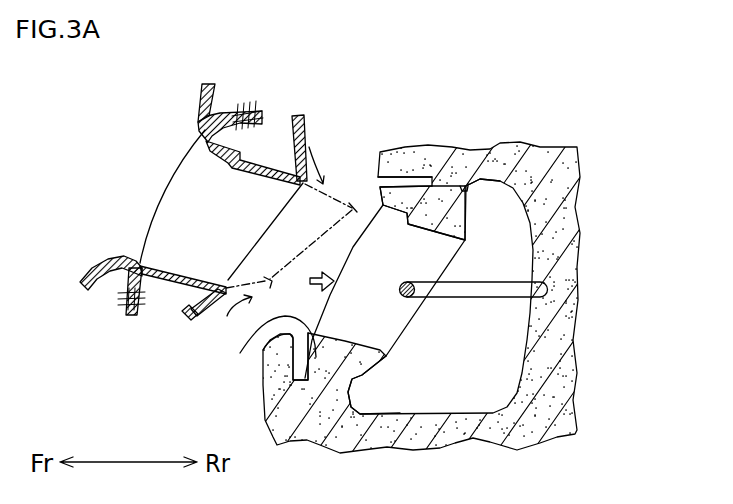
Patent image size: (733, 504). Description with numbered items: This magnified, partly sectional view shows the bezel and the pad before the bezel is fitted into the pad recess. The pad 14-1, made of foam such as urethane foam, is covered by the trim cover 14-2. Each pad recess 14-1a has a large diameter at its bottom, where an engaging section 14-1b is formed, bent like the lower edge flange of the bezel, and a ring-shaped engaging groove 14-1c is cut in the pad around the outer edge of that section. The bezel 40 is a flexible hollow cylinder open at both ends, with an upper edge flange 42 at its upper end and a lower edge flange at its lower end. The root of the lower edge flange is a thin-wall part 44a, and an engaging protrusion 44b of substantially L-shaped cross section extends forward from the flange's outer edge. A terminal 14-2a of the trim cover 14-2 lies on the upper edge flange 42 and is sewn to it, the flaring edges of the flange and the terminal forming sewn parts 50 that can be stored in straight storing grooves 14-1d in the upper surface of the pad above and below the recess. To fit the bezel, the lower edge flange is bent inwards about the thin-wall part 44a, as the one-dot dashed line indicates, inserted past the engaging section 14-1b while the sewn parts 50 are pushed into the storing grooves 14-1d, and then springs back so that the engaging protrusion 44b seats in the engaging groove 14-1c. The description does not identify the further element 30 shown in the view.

The pad 14-1 is at (567, 169).
The pad recess 14-1a is at (395, 320).
The engaging section 14-1b is at (373, 363).
The engaging groove 14-1c is at (500, 182).
The storing grooves 14-1d is at (390, 190).
The trim cover 14-2 is at (108, 262).
The terminal 14-2a is at (250, 100).
The rod member 30 is at (508, 272).
The bezel 40 is at (166, 156).
The upper edge flange 42 is at (139, 316).
The thin-wall part 44a is at (297, 180).
The engaging protrusion 44b is at (192, 319).
The sewn parts 50 is at (262, 113).